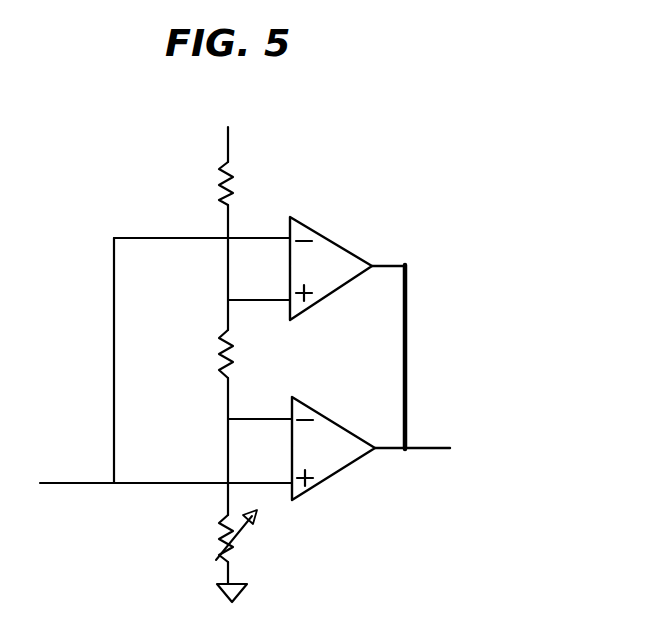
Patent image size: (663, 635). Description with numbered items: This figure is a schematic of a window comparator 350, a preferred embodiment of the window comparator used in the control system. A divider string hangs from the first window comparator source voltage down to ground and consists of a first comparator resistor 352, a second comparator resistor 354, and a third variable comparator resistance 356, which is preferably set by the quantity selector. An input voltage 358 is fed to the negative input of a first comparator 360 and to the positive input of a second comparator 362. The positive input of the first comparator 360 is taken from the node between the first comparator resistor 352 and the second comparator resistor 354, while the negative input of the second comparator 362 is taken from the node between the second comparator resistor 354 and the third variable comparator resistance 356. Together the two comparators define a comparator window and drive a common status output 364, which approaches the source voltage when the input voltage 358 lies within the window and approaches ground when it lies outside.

The window comparator 350 is at (455, 165).
The first comparator resistor 352 is at (198, 183).
The second comparator resistor 354 is at (200, 354).
The third variable comparator resistance 356 is at (212, 536).
The input voltage 358 is at (166, 490).
The first comparator 360 is at (355, 225).
The second comparator 362 is at (333, 418).
The status output 364 is at (427, 451).